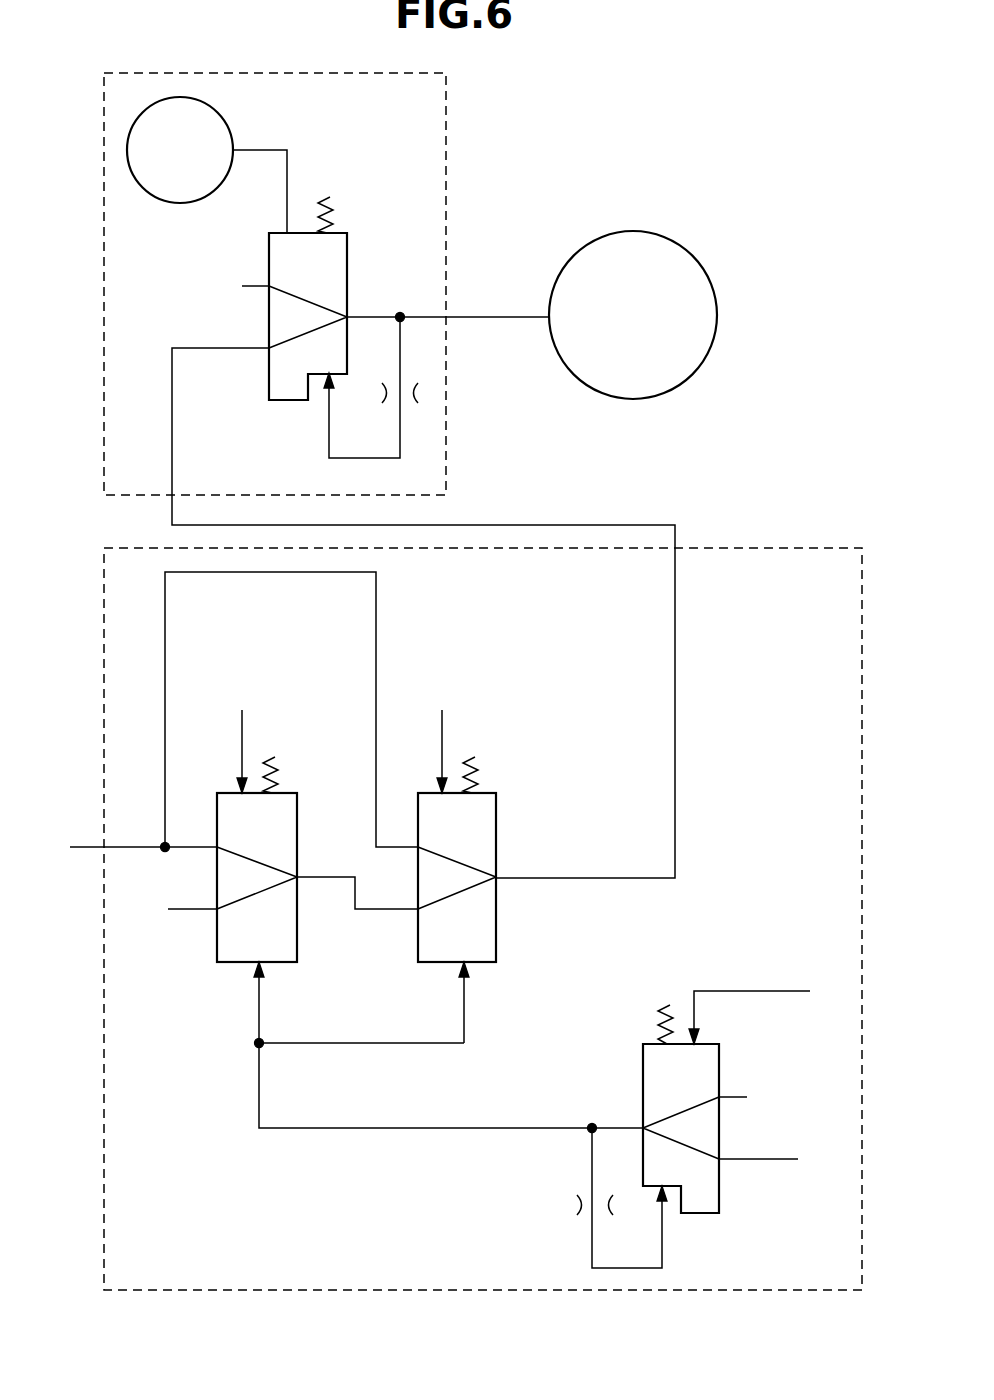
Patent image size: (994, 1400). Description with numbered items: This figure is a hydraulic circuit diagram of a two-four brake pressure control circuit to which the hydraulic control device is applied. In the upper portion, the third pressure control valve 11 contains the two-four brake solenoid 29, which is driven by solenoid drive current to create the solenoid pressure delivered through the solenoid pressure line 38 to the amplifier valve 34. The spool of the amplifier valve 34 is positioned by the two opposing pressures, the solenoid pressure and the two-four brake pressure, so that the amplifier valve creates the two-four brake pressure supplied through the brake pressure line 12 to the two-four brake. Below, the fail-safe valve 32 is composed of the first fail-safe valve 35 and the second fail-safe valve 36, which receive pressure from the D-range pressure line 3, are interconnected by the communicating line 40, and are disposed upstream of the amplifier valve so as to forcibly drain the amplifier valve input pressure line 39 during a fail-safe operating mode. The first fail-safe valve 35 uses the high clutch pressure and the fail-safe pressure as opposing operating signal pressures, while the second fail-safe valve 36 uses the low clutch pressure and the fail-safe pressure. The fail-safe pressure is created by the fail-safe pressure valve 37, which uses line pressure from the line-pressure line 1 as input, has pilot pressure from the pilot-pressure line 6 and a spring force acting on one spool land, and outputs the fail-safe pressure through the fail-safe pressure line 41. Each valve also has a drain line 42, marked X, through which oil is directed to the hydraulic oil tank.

The line-pressure line 1 is at (770, 1160).
The D-range pressure line 3 is at (92, 846).
The pilot-pressure line 6 is at (747, 990).
The third pressure control valve 11 is at (447, 120).
The 2-4 brake pressure line 12 is at (519, 313).
The 2-4/B solenoid 29 is at (228, 118).
The 2-4/B fail-safe valve 32 is at (788, 548).
The 2-4/B amplifier valve 34 is at (350, 245).
The 2-4/B first fail-safe valve 35 is at (223, 965).
The 2-4/B second fail-safe valve 36 is at (497, 937).
The fail-safe pressure valve 37 is at (641, 1080).
The 2-4/B solenoid pressure line 38 is at (278, 150).
The 2-4/B amplifier valve input pressure line 39 is at (555, 523).
The communicating line 40 is at (370, 912).
The fail-safe pressure line 41 is at (412, 1132).
The drain line 42 is at (260, 283).